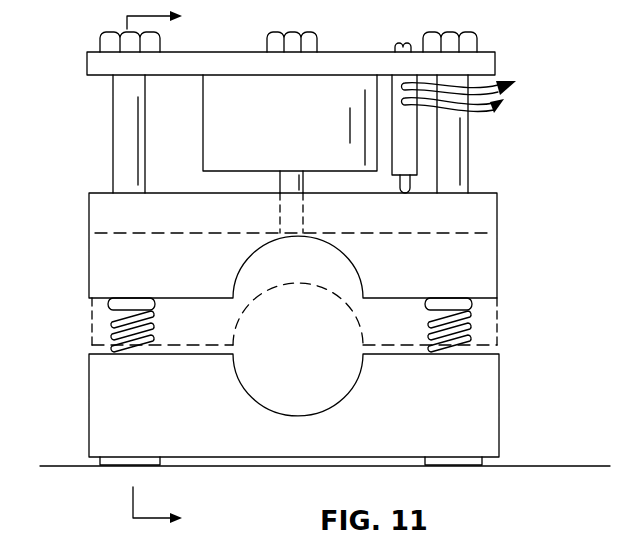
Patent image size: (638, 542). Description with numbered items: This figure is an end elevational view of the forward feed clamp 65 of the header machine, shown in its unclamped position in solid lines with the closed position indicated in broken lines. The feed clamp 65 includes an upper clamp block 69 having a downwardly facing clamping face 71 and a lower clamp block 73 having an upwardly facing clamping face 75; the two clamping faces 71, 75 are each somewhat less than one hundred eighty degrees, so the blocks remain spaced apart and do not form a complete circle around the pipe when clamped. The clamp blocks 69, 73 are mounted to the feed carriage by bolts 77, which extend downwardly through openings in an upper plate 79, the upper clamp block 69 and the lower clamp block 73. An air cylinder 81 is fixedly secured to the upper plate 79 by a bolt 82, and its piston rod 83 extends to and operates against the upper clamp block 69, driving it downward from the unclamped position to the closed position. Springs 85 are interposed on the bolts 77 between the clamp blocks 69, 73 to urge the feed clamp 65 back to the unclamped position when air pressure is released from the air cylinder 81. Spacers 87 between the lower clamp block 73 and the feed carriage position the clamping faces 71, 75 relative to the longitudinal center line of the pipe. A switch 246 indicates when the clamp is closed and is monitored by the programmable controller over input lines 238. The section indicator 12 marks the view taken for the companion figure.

The section line 12- 12 is at (168, 267).
The forward feed clamp 65 is at (540, 110).
The upper clamp block 69 is at (488, 262).
The downwardly facing clamping face 71 is at (352, 275).
The lower clamp block 73 is at (486, 400).
The upwardly facing clamping face 75 is at (342, 397).
The bolts 77 is at (127, 149).
The upper plate 79 is at (476, 68).
The air cylinder 81 is at (320, 90).
The bolt 82 is at (290, 38).
The piston rod 83 is at (292, 186).
The springs 85 is at (113, 318).
The spacers 87 is at (146, 462).
The input lines 238 is at (478, 91).
The switch 246 is at (407, 143).